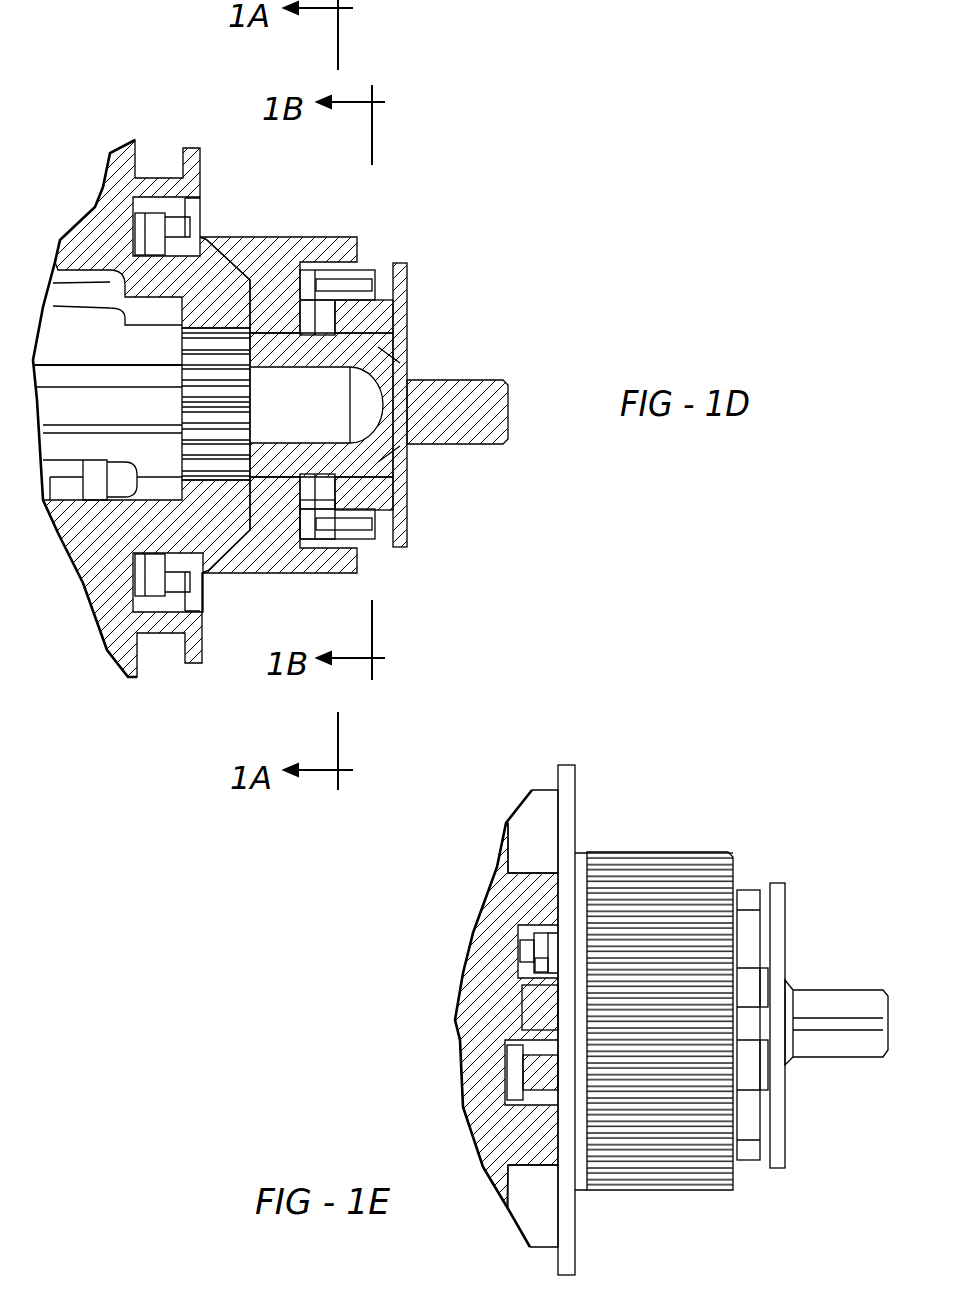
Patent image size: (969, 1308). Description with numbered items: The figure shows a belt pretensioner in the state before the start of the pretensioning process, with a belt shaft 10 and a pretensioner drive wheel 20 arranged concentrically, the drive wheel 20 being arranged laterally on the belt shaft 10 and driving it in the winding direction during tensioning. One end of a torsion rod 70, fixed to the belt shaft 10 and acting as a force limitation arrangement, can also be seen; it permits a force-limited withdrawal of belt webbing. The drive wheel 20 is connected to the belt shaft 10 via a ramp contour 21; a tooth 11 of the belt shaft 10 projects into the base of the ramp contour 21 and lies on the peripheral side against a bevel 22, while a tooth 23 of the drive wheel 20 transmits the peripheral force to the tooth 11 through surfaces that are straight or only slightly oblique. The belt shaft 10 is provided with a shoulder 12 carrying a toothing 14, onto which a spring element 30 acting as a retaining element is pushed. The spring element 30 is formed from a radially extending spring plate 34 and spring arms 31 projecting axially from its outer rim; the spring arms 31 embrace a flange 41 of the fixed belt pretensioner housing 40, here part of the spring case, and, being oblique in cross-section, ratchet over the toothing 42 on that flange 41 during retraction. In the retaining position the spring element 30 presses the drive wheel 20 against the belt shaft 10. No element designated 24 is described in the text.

In FIG. 1D, the belt shaft 10 is at (103, 217).
In FIG. 1E, the belt shaft 10 is at (500, 1113).
In FIG. 1E, the tooth 11 is at (547, 997).
In FIG. 1D, the shoulder 12 is at (287, 348).
In FIG. 1D, the toothing 14 is at (407, 363).
In FIG. 1D, the pretensioner drive wheel 20 is at (248, 258).
In FIG. 1E, the pretensioner drive wheel 20 is at (693, 970).
In FIG. 1E, the ramp contour 21 is at (543, 1043).
In FIG. 1E, the bevel 22 is at (560, 970).
In FIG. 1E, the tooth 23 is at (540, 945).
In FIG. 1E, the seal 24 is at (547, 969).
In FIG. 1D, the spring element 30 is at (360, 273).
In FIG. 1D, the spring arms 31 is at (347, 533).
In FIG. 1D, the spring plate 34 is at (300, 510).
In FIG. 1D, the belt pretensioner housing 40 is at (347, 317).
In FIG. 1D, the flange 41 is at (350, 280).
In FIG. 1D, the toothing 42 is at (375, 510).
In FIG. 1D, the torsion rod 70 is at (128, 417).